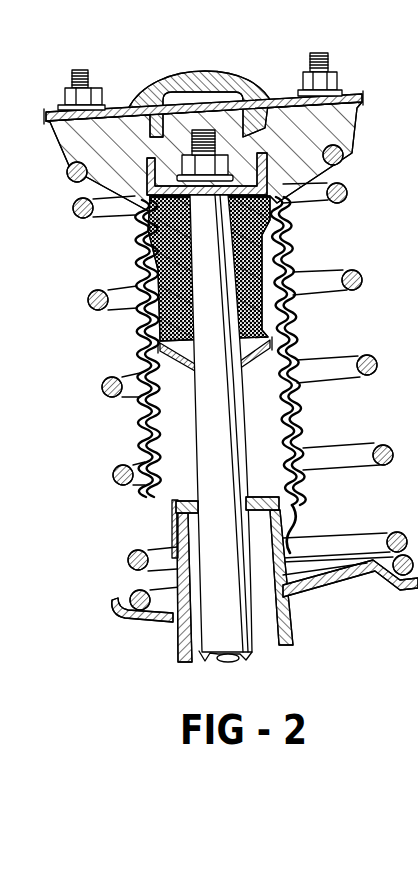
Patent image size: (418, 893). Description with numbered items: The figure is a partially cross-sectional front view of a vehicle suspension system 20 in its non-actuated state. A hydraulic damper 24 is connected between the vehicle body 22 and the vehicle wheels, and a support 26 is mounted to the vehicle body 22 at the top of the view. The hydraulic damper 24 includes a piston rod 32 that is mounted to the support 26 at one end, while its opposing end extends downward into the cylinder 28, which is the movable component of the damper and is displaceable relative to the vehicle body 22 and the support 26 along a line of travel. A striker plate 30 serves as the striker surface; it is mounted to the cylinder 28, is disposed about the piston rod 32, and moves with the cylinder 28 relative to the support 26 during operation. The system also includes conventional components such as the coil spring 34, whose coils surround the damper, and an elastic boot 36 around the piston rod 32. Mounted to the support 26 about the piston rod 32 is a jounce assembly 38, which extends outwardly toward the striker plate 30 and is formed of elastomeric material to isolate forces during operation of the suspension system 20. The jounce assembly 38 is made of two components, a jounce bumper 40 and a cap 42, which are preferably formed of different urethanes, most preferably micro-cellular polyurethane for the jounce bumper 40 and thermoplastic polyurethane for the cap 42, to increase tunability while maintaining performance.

The suspension system 20 is at (378, 316).
The vehicle body 22 is at (285, 95).
The hydraulic damper 24 is at (188, 533).
The support 26 is at (344, 126).
The cylinder 28 is at (207, 650).
The striker plate 30 is at (197, 498).
The piston rod 32 is at (220, 426).
The coil spring 34 is at (344, 376).
The elastic boot 36 is at (140, 413).
The jounce assembly 38 is at (150, 274).
The jounce bumper 40 is at (288, 252).
The cap 42 is at (256, 352).